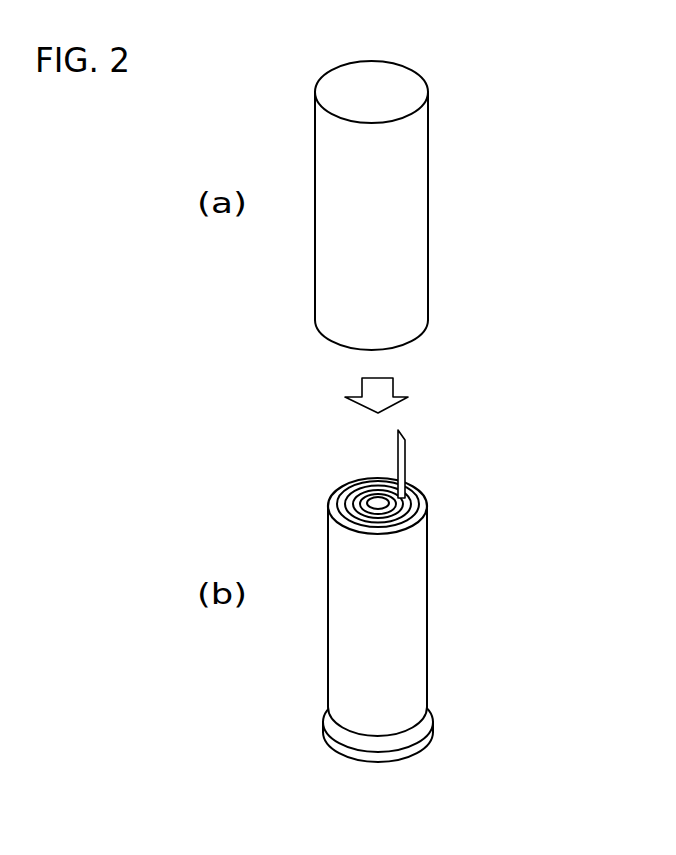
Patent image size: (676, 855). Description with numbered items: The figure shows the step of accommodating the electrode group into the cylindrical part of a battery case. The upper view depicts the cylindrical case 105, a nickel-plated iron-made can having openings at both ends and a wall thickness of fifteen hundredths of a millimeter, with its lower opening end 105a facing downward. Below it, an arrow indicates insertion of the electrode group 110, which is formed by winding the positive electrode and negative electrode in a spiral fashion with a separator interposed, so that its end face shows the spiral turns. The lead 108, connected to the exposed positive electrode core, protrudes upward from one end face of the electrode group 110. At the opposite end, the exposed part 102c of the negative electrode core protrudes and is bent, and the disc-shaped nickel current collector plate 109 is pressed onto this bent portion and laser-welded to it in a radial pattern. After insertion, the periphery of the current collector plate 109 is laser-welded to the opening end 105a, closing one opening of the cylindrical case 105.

The cylindrical case 105 is at (412, 197).
The opening end of the cylindrical case 105a is at (413, 345).
The lead 108 is at (405, 456).
The electrode group 110 is at (405, 615).
The current collector plate 109 is at (433, 731).
The exposed part of the negative electrode core 102c is at (340, 735).